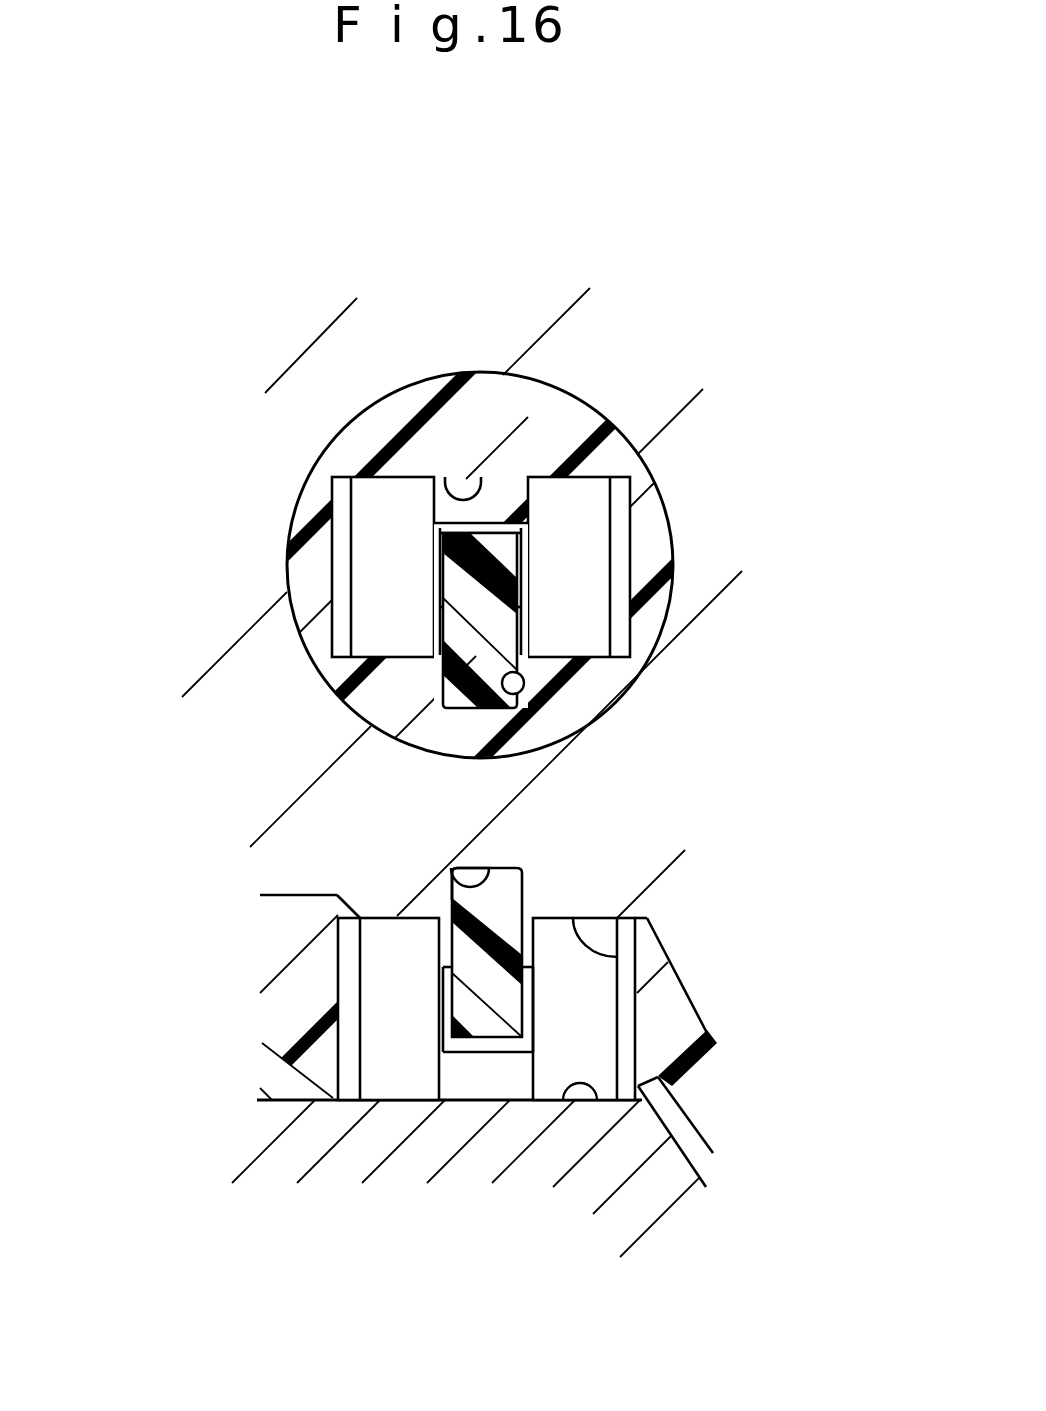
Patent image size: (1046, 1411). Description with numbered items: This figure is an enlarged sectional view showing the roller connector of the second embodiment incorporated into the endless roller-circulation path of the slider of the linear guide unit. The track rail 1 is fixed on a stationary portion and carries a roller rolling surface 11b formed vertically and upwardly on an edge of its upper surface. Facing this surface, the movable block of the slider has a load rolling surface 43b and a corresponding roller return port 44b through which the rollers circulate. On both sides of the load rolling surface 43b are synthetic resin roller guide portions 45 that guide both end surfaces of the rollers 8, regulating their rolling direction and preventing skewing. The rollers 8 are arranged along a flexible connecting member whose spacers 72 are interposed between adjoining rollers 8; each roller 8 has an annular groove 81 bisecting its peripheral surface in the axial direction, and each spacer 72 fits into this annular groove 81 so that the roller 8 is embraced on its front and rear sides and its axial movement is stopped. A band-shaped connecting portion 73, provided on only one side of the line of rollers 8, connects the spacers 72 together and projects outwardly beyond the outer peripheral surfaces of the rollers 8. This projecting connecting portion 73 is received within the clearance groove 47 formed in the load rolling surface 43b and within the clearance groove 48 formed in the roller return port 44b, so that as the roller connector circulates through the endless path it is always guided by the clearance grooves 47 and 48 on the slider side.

The track rail 1 is at (290, 1145).
The roller 8 is at (365, 537).
The roller rolling surface 11b is at (598, 1100).
The load rolling surface 43b is at (617, 957).
The roller return port 44b is at (448, 477).
The roller guide portion 45 is at (282, 1013).
The clearance groove 47 is at (455, 880).
The clearance groove 48 is at (528, 673).
The spacer 72 is at (484, 606).
The connecting portion 73 is at (447, 680).
The annular groove 81 is at (500, 523).